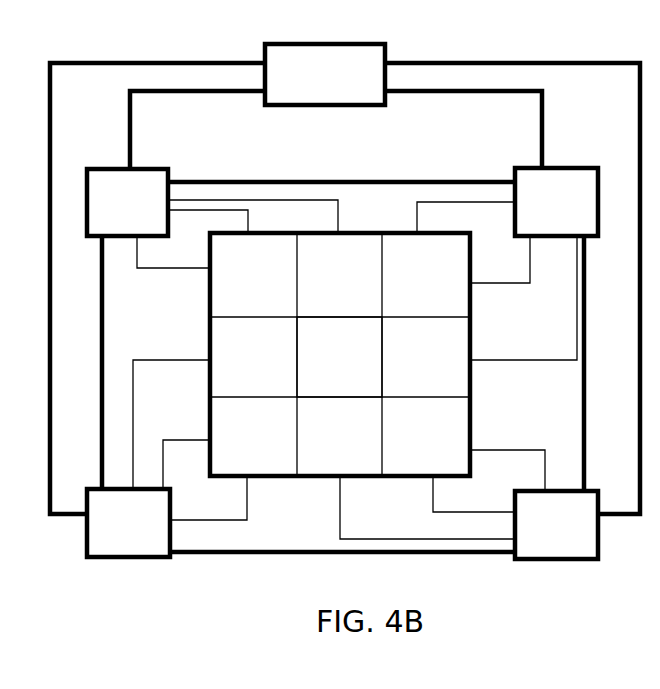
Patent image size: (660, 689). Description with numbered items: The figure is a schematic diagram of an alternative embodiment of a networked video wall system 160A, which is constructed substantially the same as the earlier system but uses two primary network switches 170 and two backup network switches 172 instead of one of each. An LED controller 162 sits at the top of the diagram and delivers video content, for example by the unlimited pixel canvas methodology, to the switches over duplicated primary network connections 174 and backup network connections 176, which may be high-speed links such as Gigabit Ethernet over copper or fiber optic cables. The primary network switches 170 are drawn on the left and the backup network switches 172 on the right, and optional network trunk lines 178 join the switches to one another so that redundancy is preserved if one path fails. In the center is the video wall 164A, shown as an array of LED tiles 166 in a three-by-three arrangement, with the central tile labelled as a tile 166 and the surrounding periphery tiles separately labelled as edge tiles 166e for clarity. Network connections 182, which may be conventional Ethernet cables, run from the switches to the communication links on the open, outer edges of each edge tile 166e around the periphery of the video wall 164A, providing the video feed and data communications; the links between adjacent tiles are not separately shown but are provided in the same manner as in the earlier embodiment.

The networked video wall system 160A is at (213, 40).
The LED controller 162 is at (325, 74).
The video wall 164A is at (375, 232).
The LED tiles 166 is at (339, 357).
The edge tiles 166e is at (340, 354).
The primary network switches 170 is at (128, 363).
The backup network switches 172 is at (556, 363).
The primary network connections 174 is at (52, 150).
The backup network connections 176 is at (638, 150).
The network trunk lines 178 is at (360, 180).
The network connections 182 is at (334, 224).